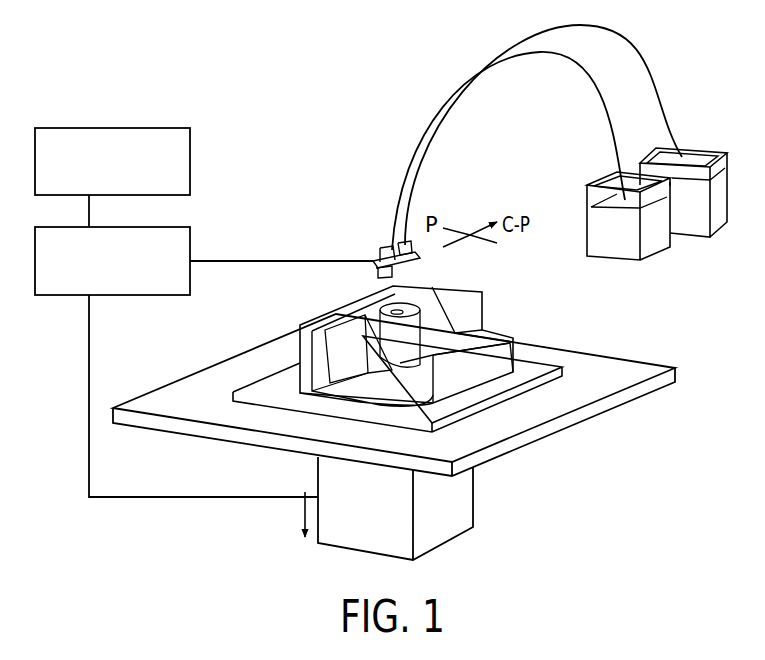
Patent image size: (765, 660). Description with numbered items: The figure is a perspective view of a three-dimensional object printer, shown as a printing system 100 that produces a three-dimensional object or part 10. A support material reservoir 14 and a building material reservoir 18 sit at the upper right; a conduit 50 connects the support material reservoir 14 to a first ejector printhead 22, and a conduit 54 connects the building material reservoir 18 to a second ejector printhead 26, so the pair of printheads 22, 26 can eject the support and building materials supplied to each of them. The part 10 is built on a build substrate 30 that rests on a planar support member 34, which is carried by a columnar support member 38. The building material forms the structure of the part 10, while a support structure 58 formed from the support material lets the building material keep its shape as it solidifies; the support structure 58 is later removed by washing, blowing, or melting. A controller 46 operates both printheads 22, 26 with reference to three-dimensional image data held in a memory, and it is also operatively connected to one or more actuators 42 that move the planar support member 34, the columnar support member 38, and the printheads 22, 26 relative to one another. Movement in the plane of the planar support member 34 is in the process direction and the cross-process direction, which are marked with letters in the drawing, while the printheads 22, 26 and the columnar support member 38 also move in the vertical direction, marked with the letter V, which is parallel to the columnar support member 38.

The printing system 100 is at (330, 100).
The controller 46 is at (191, 162).
The actuator 42 is at (191, 238).
The planar support member 34 is at (532, 449).
The build substrate 30 is at (484, 398).
The columnar support member 38 is at (465, 523).
The three-dimensional object or part 10 is at (474, 352).
The support structure 58 is at (471, 327).
The ejector printhead 26 is at (426, 268).
The ejector printhead 22 is at (358, 273).
The conduit 50 is at (605, 125).
The conduit 54 is at (638, 70).
The support material reservoir 14 is at (656, 228).
The building material reservoir 18 is at (703, 228).